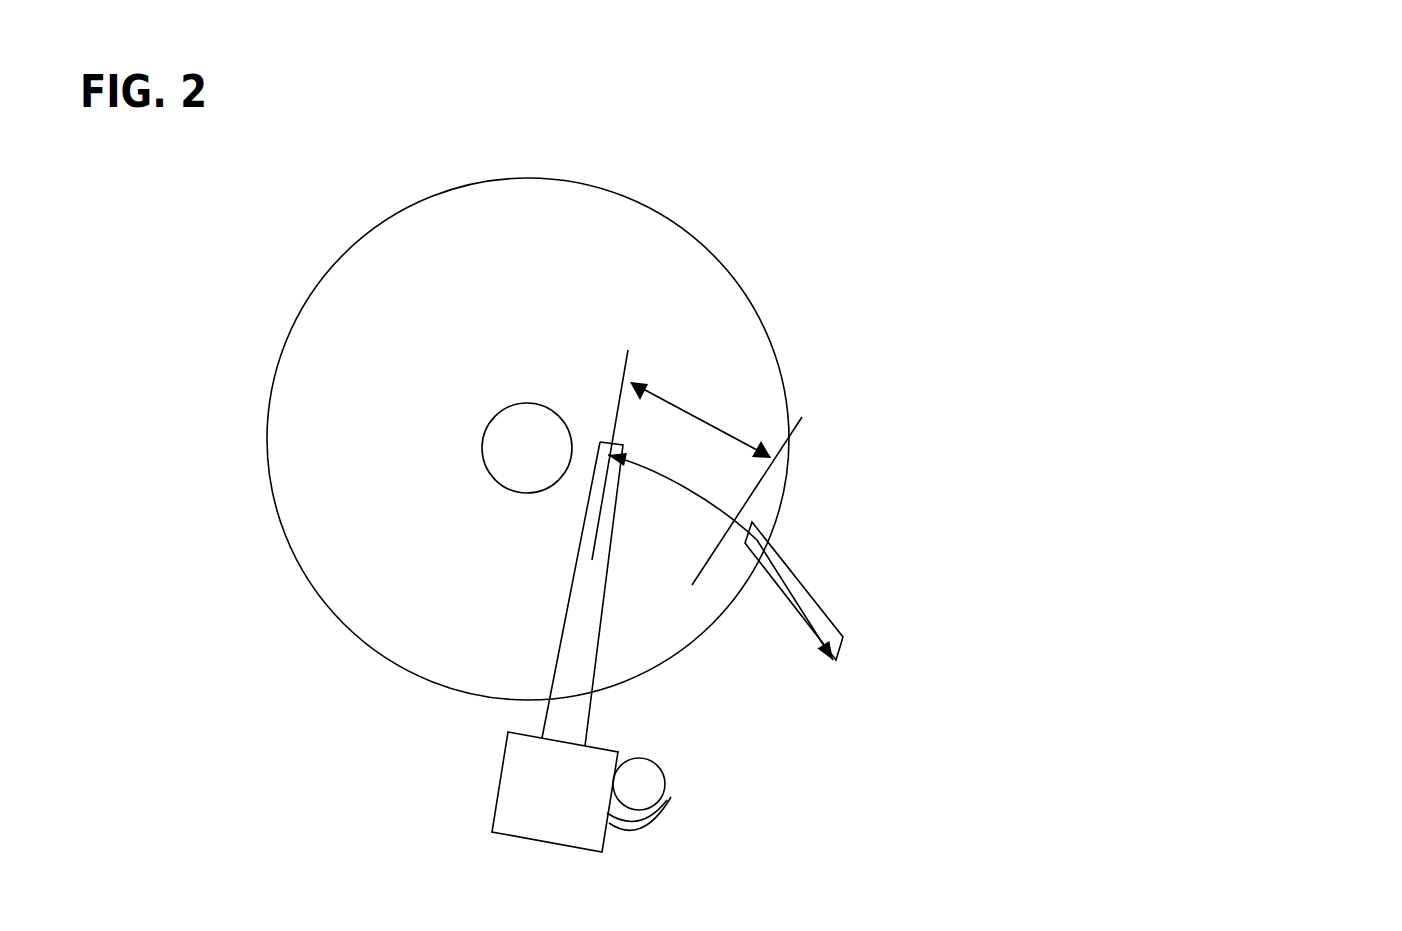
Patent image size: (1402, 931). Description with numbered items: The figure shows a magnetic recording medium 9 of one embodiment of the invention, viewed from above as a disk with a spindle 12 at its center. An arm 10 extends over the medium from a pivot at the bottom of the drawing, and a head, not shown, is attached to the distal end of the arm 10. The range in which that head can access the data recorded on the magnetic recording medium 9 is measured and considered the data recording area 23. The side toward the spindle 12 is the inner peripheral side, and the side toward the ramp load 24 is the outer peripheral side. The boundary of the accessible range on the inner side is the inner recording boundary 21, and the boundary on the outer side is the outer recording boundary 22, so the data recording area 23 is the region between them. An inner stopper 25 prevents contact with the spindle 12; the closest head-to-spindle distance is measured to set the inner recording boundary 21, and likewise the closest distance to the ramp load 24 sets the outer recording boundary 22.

The magnetic recording medium 9 is at (598, 208).
The arm 10 is at (585, 653).
The spindle 12 is at (528, 450).
The inner recording boundary 21 is at (618, 407).
The outer recording boundary 22 is at (763, 479).
The data recording area 23 is at (700, 418).
The ramp load 24 is at (803, 585).
The inner stopper 25 is at (648, 780).